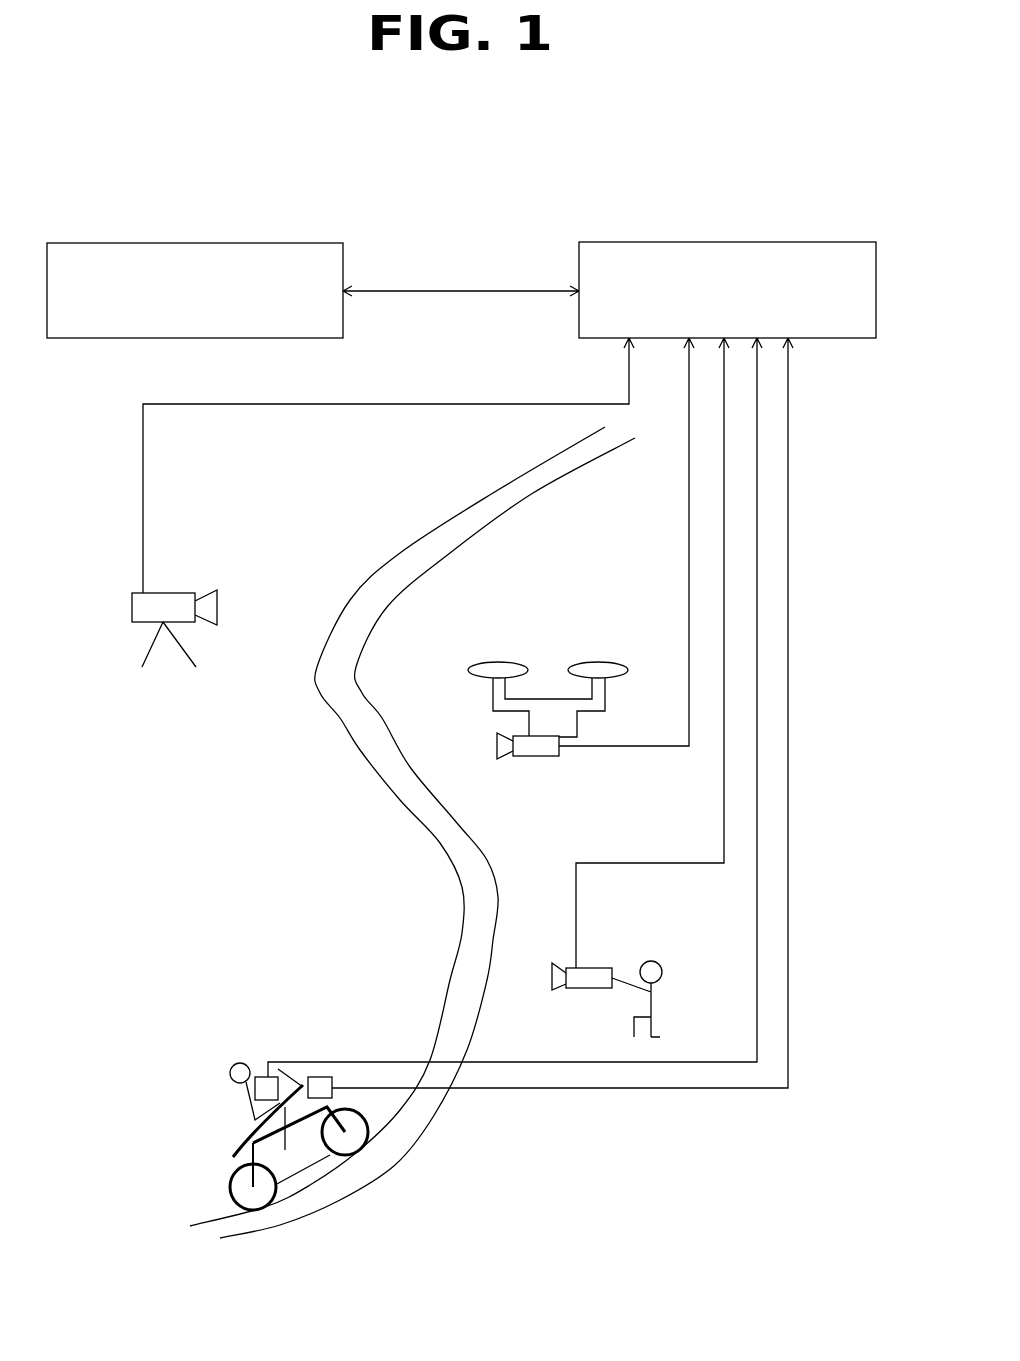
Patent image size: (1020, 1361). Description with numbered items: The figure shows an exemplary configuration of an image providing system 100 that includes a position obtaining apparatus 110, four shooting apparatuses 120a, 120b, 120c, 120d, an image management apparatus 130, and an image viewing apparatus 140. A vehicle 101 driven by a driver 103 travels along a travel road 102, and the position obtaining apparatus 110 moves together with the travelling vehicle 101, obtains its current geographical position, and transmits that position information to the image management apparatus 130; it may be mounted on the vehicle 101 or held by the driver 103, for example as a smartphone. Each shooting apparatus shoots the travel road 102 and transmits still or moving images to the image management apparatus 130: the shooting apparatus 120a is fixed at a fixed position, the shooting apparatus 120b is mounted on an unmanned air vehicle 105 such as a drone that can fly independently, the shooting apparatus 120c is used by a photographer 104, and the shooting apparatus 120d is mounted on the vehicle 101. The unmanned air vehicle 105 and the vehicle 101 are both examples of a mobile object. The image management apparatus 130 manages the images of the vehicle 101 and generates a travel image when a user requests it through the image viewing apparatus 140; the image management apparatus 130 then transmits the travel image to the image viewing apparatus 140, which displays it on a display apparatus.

The image providing system 100 is at (139, 147).
The image viewing apparatus 140 is at (288, 243).
The image management apparatus 130 is at (814, 242).
The shooting apparatus 120a is at (172, 592).
The shooting apparatus 120b is at (549, 758).
The shooting apparatus 120c is at (594, 967).
The shooting apparatus 120d is at (321, 1076).
The unmanned air vehicle 105 is at (571, 727).
The photographer 104 is at (663, 968).
The travel road 102 is at (435, 998).
The vehicle 101 is at (232, 1187).
The driver 103 is at (230, 1070).
The position obtaining apparatus 110 is at (264, 1076).